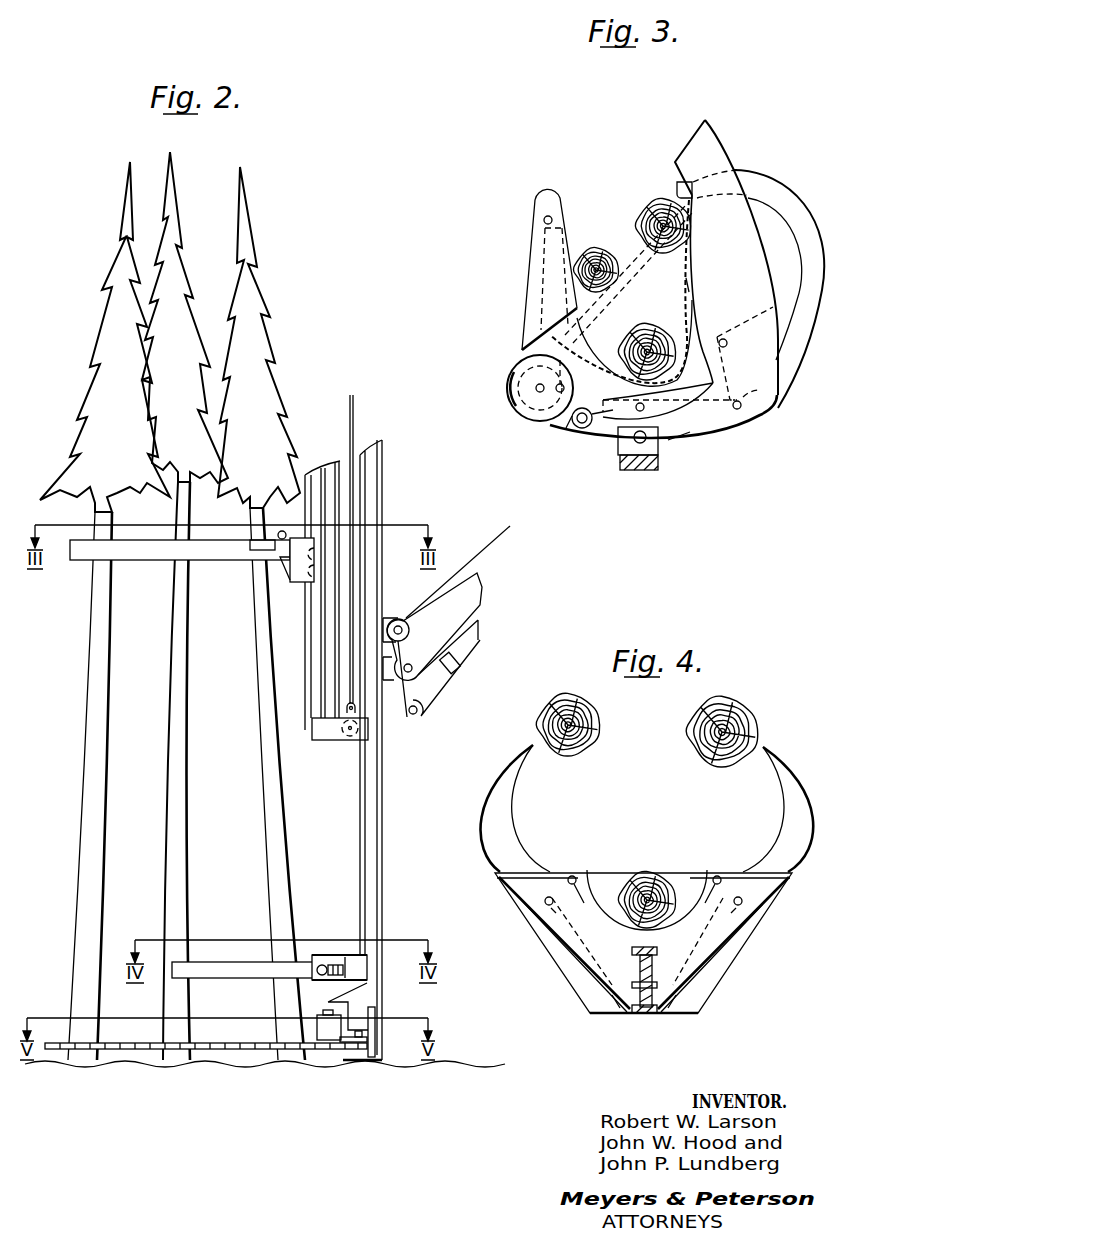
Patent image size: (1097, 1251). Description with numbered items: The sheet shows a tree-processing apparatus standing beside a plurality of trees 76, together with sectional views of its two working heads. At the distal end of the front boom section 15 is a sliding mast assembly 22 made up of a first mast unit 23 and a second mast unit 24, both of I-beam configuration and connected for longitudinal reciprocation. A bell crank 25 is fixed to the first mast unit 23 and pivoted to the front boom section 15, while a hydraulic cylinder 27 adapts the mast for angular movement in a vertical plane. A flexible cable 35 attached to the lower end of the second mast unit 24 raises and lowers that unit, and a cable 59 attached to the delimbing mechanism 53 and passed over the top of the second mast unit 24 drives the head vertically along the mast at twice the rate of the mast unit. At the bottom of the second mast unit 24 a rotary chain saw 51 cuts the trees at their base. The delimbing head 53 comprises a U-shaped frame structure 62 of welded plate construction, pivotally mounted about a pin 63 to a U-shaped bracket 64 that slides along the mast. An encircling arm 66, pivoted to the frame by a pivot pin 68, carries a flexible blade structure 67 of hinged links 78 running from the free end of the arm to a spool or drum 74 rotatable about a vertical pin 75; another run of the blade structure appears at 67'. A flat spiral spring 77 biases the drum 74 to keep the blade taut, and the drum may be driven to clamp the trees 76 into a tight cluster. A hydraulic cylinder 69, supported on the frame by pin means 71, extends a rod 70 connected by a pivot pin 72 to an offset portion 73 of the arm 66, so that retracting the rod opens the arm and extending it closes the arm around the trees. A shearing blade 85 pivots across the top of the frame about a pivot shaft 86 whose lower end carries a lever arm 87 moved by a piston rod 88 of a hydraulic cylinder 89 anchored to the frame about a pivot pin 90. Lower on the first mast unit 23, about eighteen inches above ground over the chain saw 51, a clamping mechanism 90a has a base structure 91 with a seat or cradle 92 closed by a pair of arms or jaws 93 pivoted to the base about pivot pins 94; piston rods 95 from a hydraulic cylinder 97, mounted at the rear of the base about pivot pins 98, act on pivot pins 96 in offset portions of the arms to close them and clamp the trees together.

In FIG. 2, the front boom section 15 is at (480, 574).
In FIG. 2, the sliding mast assembly 22 is at (336, 688).
In FIG. 2, the first mast unit 23 is at (370, 868).
In FIG. 4, the first mast unit 23 is at (647, 1013).
In FIG. 2, the second mast unit 24 is at (335, 649).
In FIG. 2, the bell crank 25 is at (413, 720).
In FIG. 2, the hydraulic cylinder 27 is at (466, 636).
In FIG. 2, the flexible cable 35 is at (488, 550).
In FIG. 2, the rotary chain saw 51 is at (135, 1043).
In FIG. 2, the delimbing head mechanism 53 is at (160, 570).
In FIG. 3, the delimbing head mechanism 53 is at (748, 440).
In FIG. 2, the cable 59 is at (283, 531).
In FIG. 3, the U-shaped frame structure 62 is at (767, 417).
In FIG. 3, the pin 63 is at (660, 440).
In FIG. 3, the U-shaped bracket 64 is at (638, 471).
In FIG. 3, the encircling arm 66 is at (740, 170).
In FIG. 3, the flexible blade structure 67 is at (619, 291).
In FIG. 3, the chain return run 67' is at (628, 274).
In FIG. 3, the pivot pin 68 is at (727, 344).
In FIG. 3, the hydraulic cylinder 69 is at (613, 410).
In FIG. 3, the extensible rod 70 is at (697, 420).
In FIG. 3, the pin means 71 is at (639, 411).
In FIG. 3, the pin 72 is at (745, 400).
In FIG. 3, the offset portion 73 is at (747, 402).
In FIG. 3, the spool or drum 74 is at (507, 396).
In FIG. 3, the vertical pin or shaft 75 is at (538, 392).
In FIG. 2, the trees 76 is at (165, 700).
In FIG. 3, the trees 76 is at (637, 333).
In FIG. 4, the trees 76 is at (688, 723).
In FIG. 3, the flat spiral spring 77 is at (512, 392).
In FIG. 3, the links 78 is at (687, 285).
In FIG. 3, the shearing blade 85 is at (668, 440).
In FIG. 3, the pivot shaft 86 is at (580, 426).
In FIG. 3, the lever arm 87 is at (572, 418).
In FIG. 3, the piston rod 88 is at (574, 350).
In FIG. 3, the hydraulic cylinder 89 is at (548, 252).
In FIG. 3, the pivot pin 90 is at (551, 217).
In FIG. 2, the clamping mechanism 90a is at (246, 980).
In FIG. 4, the clamping mechanism 90a is at (641, 937).
In FIG. 4, the base structure 91 is at (720, 962).
In FIG. 4, the seat or cradle 92 is at (610, 924).
In FIG. 4, the arms or jaws 93 is at (517, 782).
In FIG. 4, the pivot pins 94 is at (573, 876).
In FIG. 4, the piston rods 95 is at (580, 900).
In FIG. 4, the pivot pins 96 is at (549, 897).
In FIG. 4, the hydraulic cylinder 97 is at (565, 937).
In FIG. 4, the pivot pins 98 is at (610, 985).